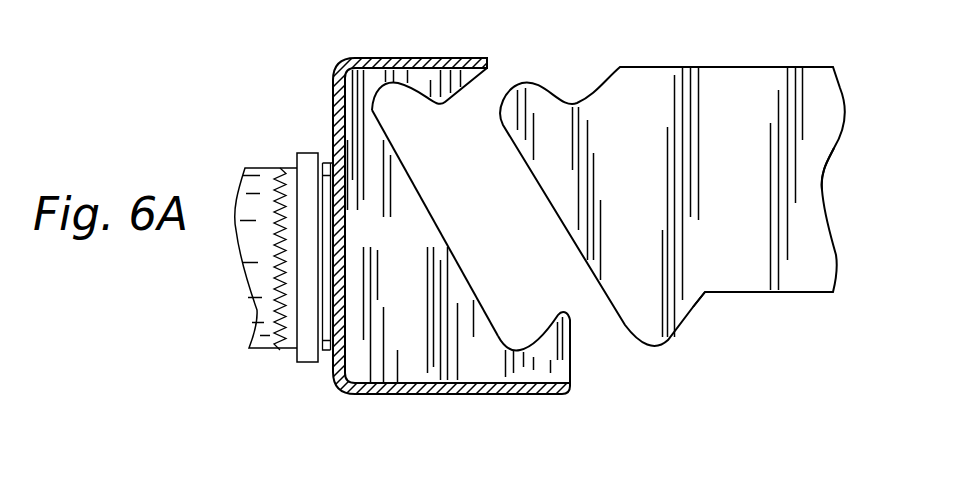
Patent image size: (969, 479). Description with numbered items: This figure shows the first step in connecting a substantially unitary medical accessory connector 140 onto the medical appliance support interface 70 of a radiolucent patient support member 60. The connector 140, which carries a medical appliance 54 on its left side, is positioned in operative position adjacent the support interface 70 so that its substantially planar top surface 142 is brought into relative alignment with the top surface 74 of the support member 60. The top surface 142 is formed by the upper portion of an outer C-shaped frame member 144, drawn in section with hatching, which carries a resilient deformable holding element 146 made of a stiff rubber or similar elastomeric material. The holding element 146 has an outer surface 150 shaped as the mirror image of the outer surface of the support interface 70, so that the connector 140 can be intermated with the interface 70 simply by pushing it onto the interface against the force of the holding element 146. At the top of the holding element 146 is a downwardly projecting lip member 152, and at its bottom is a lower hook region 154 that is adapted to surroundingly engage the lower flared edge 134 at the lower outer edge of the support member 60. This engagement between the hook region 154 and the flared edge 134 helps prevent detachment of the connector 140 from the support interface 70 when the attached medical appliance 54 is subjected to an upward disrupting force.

The medical appliance 54 is at (267, 337).
The support member 60 is at (730, 195).
The medical appliance support interface 70 is at (635, 153).
The top surface 74 is at (748, 63).
The lower flared edge 134 is at (660, 322).
The unitary medical accessory connector 140 is at (331, 57).
The top surface 142 is at (417, 58).
The outer C-shaped frame member 144 is at (393, 395).
The resilient deformable holding element 146 is at (440, 322).
The outer surface 150 is at (432, 220).
The downwardly projecting lip member 152 is at (450, 97).
The lower hook region 154 is at (563, 337).